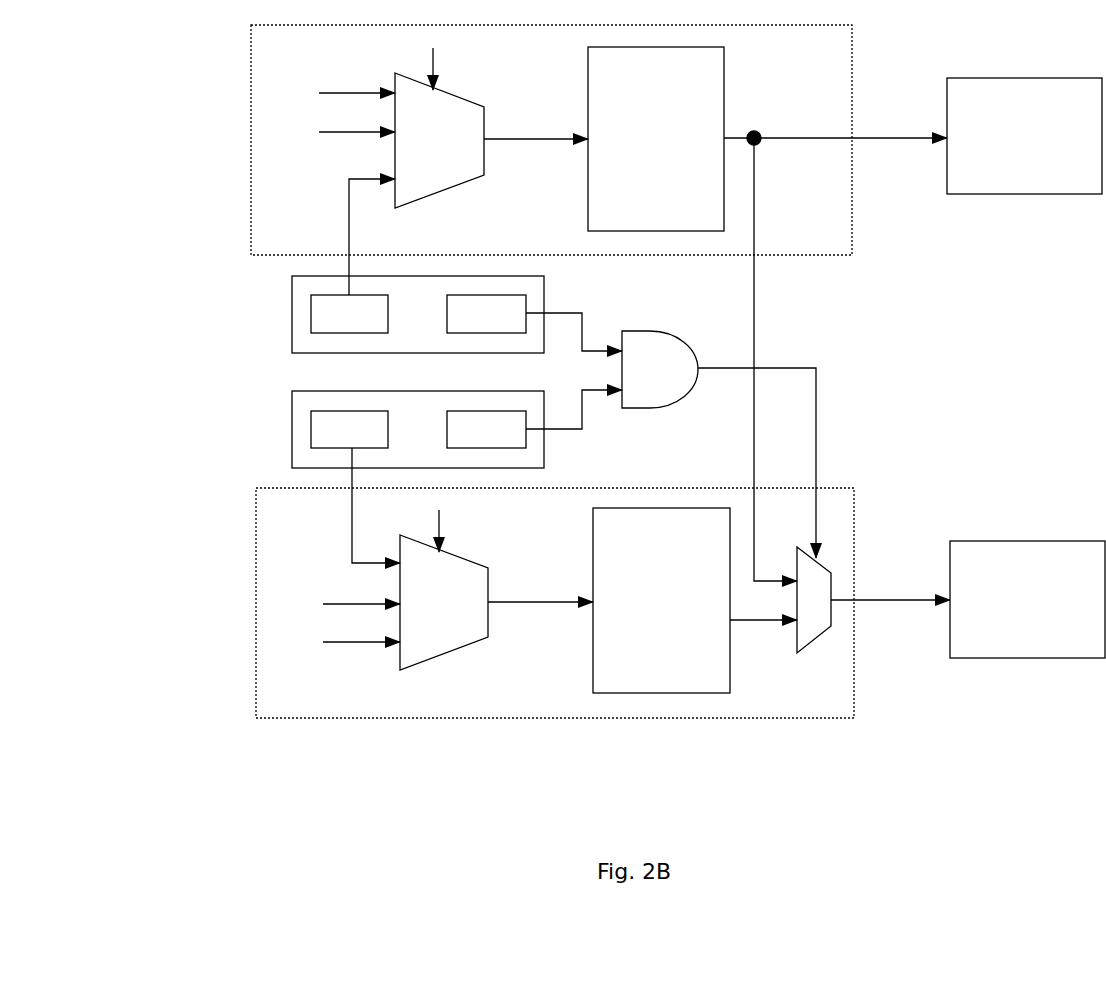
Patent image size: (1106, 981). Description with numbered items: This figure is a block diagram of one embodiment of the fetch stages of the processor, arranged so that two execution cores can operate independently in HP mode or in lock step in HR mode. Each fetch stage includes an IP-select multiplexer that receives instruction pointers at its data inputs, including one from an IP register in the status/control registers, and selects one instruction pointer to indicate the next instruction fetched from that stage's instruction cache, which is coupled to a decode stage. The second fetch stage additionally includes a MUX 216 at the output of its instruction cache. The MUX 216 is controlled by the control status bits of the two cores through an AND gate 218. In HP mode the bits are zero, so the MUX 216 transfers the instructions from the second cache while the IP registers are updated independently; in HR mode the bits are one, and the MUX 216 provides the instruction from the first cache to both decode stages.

The AND gate 218 is at (719, 444).
The MUX 216 is at (852, 395).